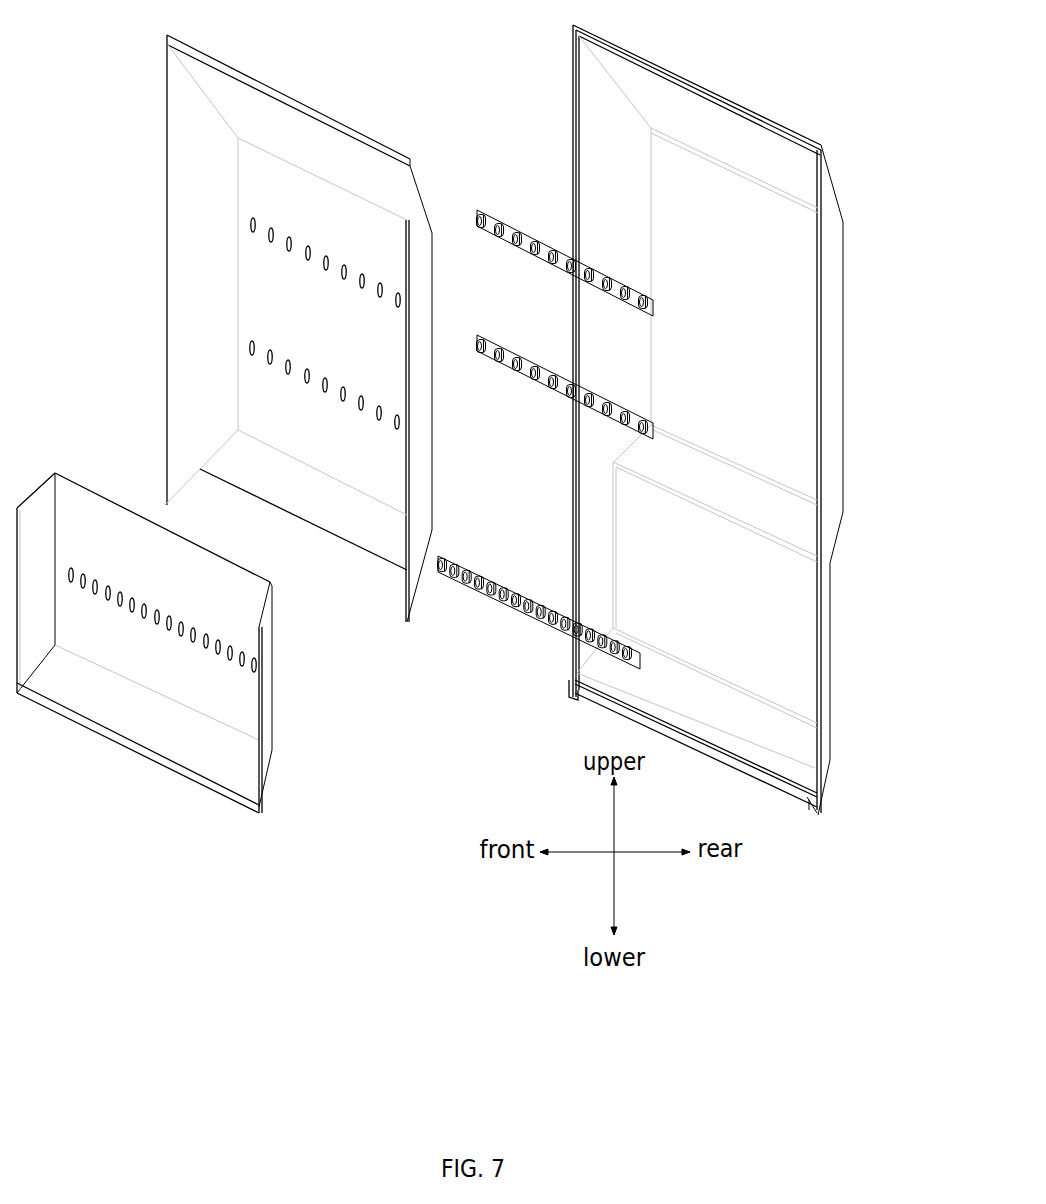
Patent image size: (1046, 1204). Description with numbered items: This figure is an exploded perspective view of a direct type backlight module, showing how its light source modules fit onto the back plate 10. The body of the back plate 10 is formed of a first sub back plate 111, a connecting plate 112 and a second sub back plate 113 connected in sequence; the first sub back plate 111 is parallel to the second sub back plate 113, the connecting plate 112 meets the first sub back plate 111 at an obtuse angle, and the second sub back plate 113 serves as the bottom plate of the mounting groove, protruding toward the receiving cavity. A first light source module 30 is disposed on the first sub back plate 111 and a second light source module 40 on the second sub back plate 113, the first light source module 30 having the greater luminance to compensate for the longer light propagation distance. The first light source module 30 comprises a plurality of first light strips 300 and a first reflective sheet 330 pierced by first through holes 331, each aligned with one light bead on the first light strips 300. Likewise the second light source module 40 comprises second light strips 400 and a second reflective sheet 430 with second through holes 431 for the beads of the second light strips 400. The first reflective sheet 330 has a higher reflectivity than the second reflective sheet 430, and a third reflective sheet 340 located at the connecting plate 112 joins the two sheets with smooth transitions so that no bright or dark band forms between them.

The back plate 10 is at (737, 420).
The first sub back plate 111 is at (740, 648).
The connecting plate 112 is at (790, 512).
The second sub back plate 113 is at (740, 327).
The first light source module 30 is at (415, 82).
The first light strips 300 is at (515, 233).
The first reflective sheet 330 is at (263, 328).
The first through holes 331 is at (272, 238).
The third reflective sheet 340 is at (265, 468).
The second light source module 40 is at (348, 745).
The second light strips 400 is at (484, 593).
The second reflective sheet 430 is at (187, 643).
The second through holes 431 is at (107, 597).